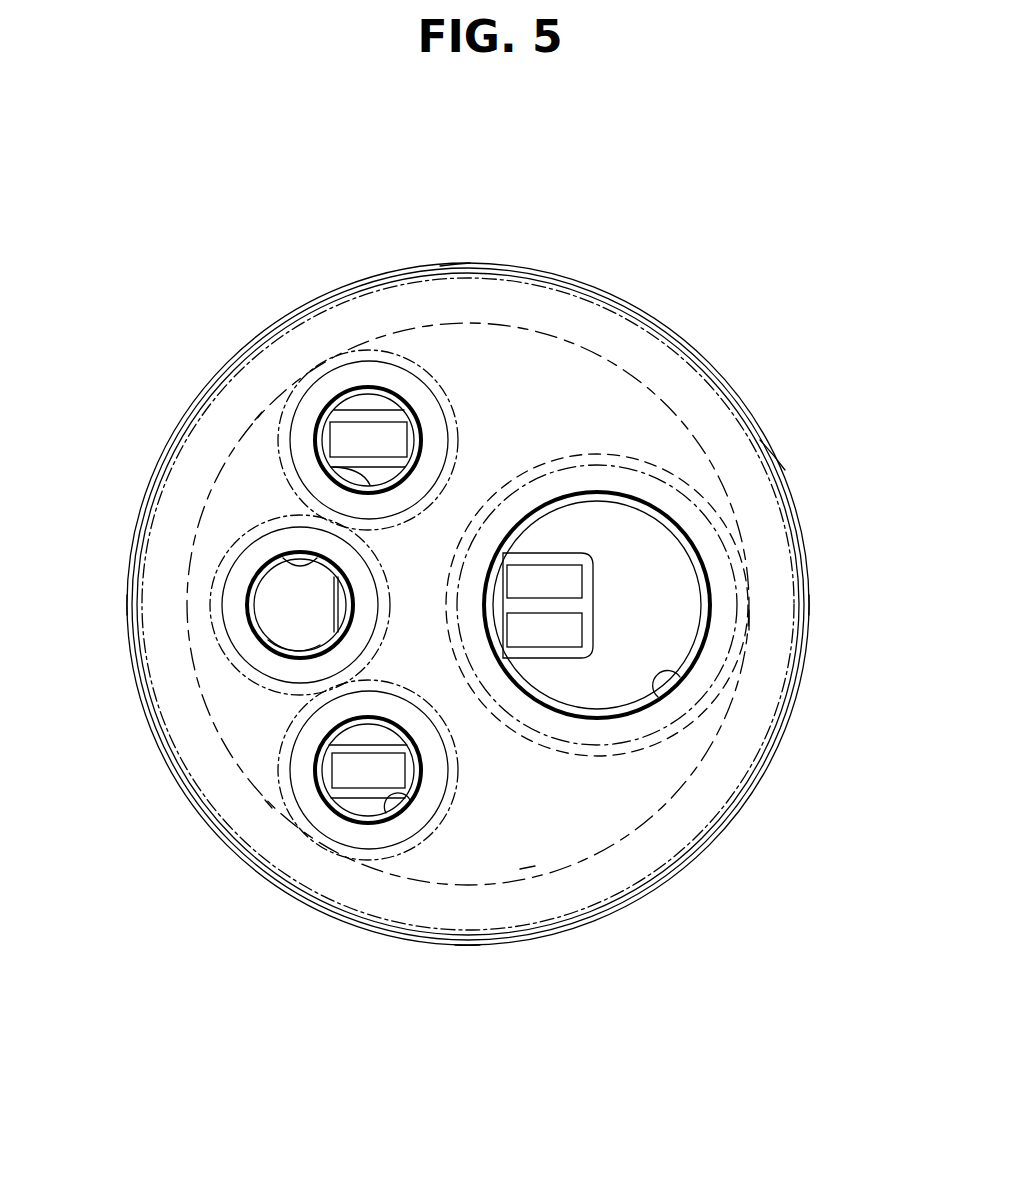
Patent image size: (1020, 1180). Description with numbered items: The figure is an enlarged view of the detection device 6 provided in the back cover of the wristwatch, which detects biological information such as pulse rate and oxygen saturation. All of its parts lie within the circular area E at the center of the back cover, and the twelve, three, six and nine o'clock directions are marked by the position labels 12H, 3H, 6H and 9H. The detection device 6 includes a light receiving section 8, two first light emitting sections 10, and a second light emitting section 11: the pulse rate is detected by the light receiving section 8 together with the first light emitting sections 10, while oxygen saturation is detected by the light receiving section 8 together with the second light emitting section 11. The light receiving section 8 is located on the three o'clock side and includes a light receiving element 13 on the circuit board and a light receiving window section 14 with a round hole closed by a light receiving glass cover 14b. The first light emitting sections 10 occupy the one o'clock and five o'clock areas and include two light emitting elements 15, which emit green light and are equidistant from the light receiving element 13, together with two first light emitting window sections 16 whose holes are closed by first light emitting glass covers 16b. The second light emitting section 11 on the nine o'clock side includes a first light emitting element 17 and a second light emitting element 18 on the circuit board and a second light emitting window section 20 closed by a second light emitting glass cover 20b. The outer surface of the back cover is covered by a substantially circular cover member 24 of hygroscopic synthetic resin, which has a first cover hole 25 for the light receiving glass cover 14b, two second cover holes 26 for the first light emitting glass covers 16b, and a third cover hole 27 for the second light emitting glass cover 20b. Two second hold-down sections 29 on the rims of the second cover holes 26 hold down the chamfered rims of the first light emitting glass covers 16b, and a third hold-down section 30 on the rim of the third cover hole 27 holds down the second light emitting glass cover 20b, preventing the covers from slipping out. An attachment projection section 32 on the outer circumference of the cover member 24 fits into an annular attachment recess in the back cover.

The detection device 6 is at (468, 548).
The attachment projection section 32 is at (560, 287).
The light receiving section 8 is at (202, 592).
The first light emitting sections 10 is at (270, 432).
The second light emitting section 11 is at (752, 620).
The cover member 24 is at (527, 868).
The first light emitting window sections 16 is at (306, 609).
The first light emitting glass covers 16b is at (378, 408).
The light emitting elements 15 is at (365, 432).
The second cover holes 26 is at (333, 466).
The second hold-down sections 29 is at (413, 408).
The light receiving window section 14 is at (230, 607).
The light receiving glass cover 14b is at (283, 617).
The light receiving element 13 is at (306, 630).
The first cover hole 25 is at (283, 558).
The second light emitting window section 20 is at (658, 590).
The second light emitting glass cover 20b is at (675, 633).
The third cover hole 27 is at (657, 700).
The third hold-down section 30 is at (684, 590).
The second light emitting element 18 is at (555, 577).
The first light emitting element 17 is at (567, 640).
The circular area E is at (775, 455).
The 12 o'clock position 12H is at (458, 247).
The 3 o'clock position 3H is at (98, 612).
The 9 o'clock position 9H is at (846, 607).
The 6 o'clock position 6H is at (461, 968).